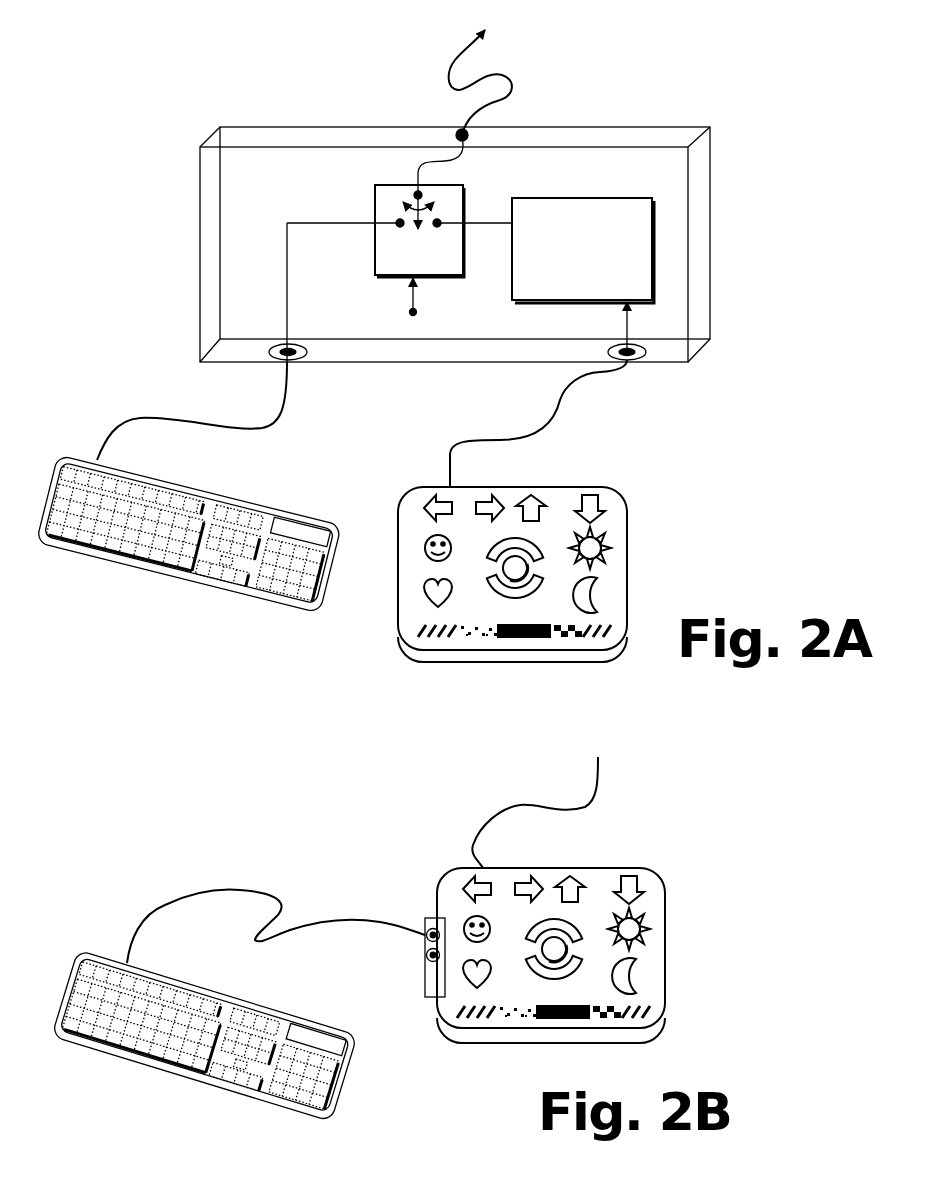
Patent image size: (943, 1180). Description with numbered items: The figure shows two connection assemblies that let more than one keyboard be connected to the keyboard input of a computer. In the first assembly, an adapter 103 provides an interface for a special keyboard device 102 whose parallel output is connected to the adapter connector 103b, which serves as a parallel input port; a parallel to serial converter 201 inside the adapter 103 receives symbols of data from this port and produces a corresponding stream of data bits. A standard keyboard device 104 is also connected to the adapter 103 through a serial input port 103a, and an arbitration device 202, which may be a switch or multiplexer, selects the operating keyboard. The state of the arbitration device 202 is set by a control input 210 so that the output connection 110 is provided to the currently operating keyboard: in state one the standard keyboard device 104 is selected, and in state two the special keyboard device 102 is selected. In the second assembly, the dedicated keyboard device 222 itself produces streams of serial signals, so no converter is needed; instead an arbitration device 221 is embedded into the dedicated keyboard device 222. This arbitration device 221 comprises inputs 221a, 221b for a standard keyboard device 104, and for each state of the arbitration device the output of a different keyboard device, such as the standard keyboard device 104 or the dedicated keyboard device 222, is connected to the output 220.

In FIG. 2A, the special keyboard device 102 is at (565, 484).
In FIG. 2A, the adapter 103 is at (696, 297).
In FIG. 2A, the serial input port 103a is at (274, 362).
In FIG. 2A, the parallel input port 103b is at (642, 358).
In FIG. 2A, the standard keyboard device 104 is at (126, 578).
In FIG. 2B, the standard keyboard device 104 is at (146, 1080).
In FIG. 2A, the output connection 110 is at (450, 62).
In FIG. 2A, the parallel to serial converter 201 is at (550, 196).
In FIG. 2A, the arbitration device 202 is at (372, 193).
In FIG. 2A, the control input 210 is at (408, 309).
In FIG. 2B, the output 220 is at (472, 847).
In FIG. 2B, the arbitration device 221 is at (387, 928).
In FIG. 2B, the input 221a is at (425, 935).
In FIG. 2B, the input 221b is at (425, 957).
In FIG. 2B, the dedicated keyboard device 222 is at (602, 866).